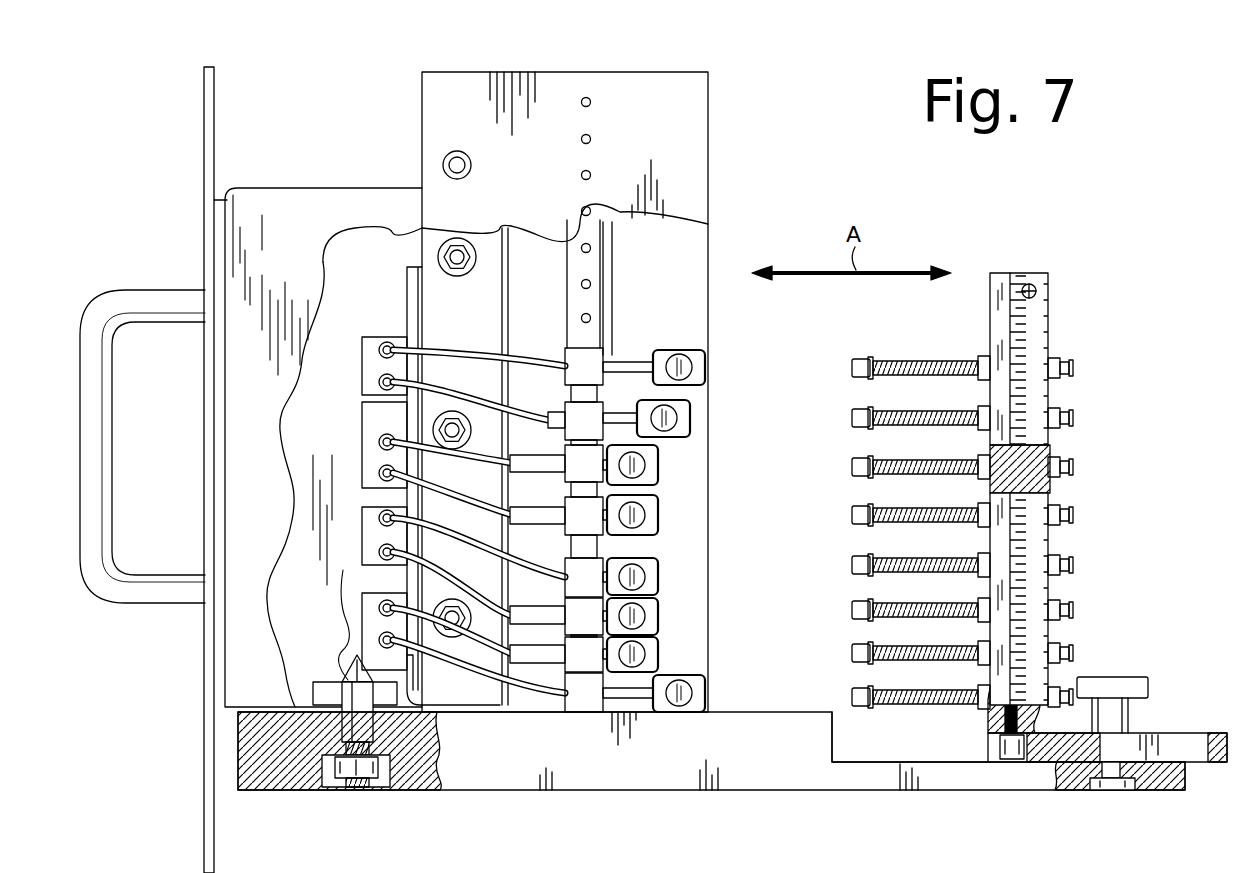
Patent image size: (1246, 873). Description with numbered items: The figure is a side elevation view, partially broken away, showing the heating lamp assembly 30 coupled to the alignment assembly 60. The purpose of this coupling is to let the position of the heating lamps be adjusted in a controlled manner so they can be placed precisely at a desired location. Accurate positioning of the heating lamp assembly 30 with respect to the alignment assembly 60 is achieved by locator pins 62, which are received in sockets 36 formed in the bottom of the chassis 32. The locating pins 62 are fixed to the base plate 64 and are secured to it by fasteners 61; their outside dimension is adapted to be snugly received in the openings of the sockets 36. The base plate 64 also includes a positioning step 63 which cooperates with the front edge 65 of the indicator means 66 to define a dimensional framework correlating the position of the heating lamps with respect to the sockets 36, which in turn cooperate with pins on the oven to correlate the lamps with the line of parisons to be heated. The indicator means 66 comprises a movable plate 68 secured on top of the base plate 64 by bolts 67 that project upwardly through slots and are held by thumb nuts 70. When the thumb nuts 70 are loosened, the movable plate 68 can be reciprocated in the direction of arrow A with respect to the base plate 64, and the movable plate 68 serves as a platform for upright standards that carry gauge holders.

The heating lamp assembly 30 is at (345, 88).
The chassis 32 is at (288, 200).
The sockets 36 is at (326, 682).
The alignment assembly 60 is at (1134, 303).
The fasteners 61 is at (338, 788).
The locator pins 62 is at (353, 652).
The positioning step 63 is at (842, 740).
The base plate 64 is at (627, 770).
The front edge 65 is at (982, 740).
The indicator means 66 is at (1100, 620).
The bolts 67 is at (1192, 772).
The movable plate 68 is at (1220, 733).
The thumb nuts 70 is at (1140, 678).